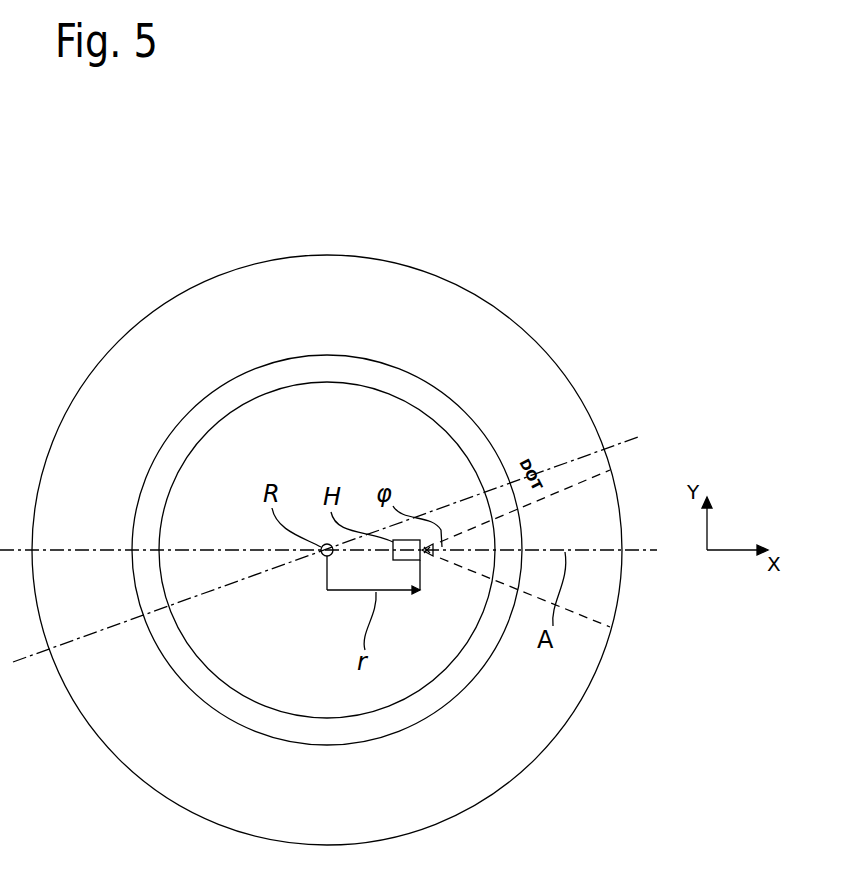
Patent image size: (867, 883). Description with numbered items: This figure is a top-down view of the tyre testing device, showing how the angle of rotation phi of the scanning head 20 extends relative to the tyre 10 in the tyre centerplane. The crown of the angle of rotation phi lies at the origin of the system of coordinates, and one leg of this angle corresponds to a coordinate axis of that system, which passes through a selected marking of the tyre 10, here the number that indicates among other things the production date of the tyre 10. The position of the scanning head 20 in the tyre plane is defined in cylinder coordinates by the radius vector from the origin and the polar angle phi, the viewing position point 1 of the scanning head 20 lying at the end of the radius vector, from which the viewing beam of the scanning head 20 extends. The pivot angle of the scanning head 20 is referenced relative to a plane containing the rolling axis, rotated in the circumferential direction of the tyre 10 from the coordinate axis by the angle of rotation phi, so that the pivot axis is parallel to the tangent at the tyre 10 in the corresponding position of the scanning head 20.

The tyre 10 is at (495, 324).
The scanning head 20 is at (412, 558).
The measurement point / detector 1 is at (433, 546).